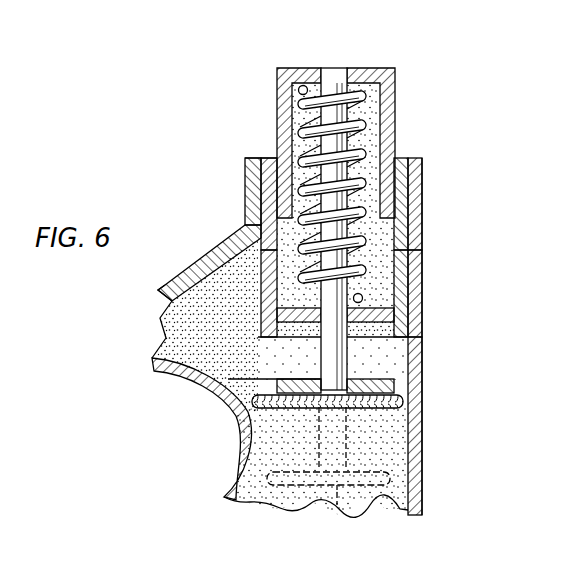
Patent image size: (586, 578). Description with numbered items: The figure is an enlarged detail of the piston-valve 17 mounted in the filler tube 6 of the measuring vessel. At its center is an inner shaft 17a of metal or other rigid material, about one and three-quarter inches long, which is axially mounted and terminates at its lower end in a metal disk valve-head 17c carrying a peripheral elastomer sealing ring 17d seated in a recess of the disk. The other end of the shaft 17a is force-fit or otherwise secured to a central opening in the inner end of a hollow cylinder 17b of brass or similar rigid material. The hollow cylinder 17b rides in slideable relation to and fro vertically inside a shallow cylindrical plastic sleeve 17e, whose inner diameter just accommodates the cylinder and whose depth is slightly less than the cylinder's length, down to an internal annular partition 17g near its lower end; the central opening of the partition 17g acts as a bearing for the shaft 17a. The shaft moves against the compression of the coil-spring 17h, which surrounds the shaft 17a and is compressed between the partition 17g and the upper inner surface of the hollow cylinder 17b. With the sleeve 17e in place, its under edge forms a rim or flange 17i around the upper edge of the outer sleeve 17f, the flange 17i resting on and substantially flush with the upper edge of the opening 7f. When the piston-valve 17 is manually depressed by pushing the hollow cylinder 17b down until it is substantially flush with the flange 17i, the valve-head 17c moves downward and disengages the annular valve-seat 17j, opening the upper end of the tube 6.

The tube 6 is at (422, 476).
The piston-valve 17 is at (345, 276).
The inner shaft 17a is at (336, 80).
The hollow cylinder 17b is at (387, 93).
The disk valve-head 17c is at (246, 421).
The elastomer sealing ring 17d is at (392, 412).
The cylindrical plastic sleeve 17e is at (262, 252).
The outer sleeve 17f is at (405, 207).
The opening 7f is at (245, 217).
The internal annular partition 17g is at (363, 298).
The coil-spring 17h is at (290, 116).
The flange 17i is at (245, 160).
The annular valve-seat 17j is at (394, 380).